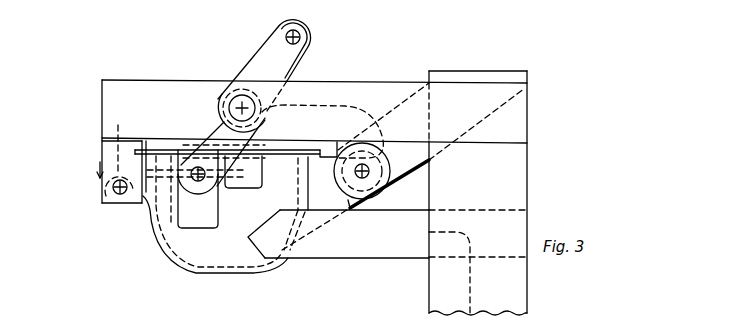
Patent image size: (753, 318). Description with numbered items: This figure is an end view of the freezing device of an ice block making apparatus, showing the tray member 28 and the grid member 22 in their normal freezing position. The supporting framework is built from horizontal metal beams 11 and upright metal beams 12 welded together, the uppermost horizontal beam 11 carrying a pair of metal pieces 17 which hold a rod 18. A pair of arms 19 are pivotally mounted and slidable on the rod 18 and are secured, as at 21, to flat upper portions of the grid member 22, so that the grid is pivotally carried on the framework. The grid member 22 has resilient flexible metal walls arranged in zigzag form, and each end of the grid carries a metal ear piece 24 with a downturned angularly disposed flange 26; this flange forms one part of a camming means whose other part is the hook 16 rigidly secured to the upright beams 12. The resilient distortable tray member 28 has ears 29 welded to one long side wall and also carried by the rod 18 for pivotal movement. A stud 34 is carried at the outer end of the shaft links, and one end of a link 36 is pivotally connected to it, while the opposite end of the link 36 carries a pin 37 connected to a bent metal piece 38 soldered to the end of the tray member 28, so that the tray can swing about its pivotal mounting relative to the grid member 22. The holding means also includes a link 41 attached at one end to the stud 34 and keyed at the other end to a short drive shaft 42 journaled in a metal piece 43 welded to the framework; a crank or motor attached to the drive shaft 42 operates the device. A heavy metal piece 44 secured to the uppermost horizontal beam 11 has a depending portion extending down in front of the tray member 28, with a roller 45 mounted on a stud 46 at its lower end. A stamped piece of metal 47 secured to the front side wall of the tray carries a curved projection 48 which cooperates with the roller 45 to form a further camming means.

The horizontal metal beams 11 is at (132, 80).
The upright metal beams 12 is at (525, 172).
The hook 16 is at (379, 256).
The metal pieces 17 is at (424, 168).
The rod 18 is at (368, 175).
The arms 19 is at (348, 104).
The securing point of arms to grid 21 is at (297, 180).
The grid member 22 is at (158, 214).
The ear piece 24 is at (282, 140).
The flange 26 is at (245, 192).
The tray member 28 is at (214, 234).
The ears 29 is at (348, 208).
The stud 34 is at (285, 37).
The links 36 is at (214, 128).
The pin 37 is at (199, 182).
The bent metal piece 38 is at (213, 230).
The link 41 is at (247, 74).
The drive shaft 42 is at (240, 108).
The metal piece 43 is at (396, 80).
The heavy metal piece 44 is at (101, 147).
The roller 45 is at (122, 205).
The stud 46 is at (114, 187).
The stamped piece of metal 47 is at (120, 138).
The curved projection 48 is at (99, 166).